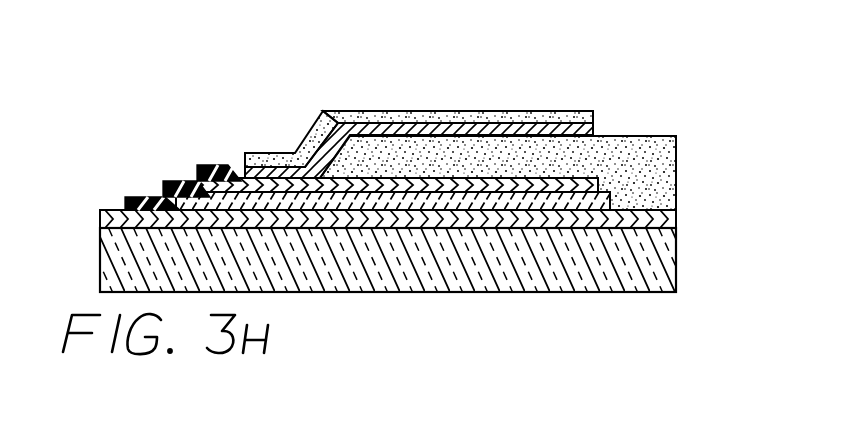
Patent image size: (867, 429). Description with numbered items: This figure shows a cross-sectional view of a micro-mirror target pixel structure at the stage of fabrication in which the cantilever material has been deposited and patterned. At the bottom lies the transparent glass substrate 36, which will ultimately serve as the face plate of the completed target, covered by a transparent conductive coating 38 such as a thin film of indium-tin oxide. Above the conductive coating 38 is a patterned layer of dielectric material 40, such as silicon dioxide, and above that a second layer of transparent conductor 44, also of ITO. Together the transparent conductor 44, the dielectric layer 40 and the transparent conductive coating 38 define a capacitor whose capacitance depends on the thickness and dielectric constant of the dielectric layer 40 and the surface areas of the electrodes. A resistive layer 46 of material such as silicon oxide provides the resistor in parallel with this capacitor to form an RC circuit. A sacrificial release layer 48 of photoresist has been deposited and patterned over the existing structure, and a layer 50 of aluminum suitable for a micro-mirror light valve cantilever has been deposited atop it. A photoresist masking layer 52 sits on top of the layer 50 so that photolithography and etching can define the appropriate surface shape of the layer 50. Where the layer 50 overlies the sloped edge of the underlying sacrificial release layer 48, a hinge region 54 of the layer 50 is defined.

The transparent glass substrate 36 is at (515, 277).
The transparent conductive coating 38 is at (655, 220).
The dielectric layer 40 is at (612, 197).
The second layer of transparent conductor 44 is at (241, 178).
The resistive layer 46 is at (187, 181).
The sacrificial release layer 48 is at (622, 148).
The cantilever layer 50 is at (398, 128).
The photoresist masking layer 52 is at (508, 118).
The hinge region 54 is at (308, 150).